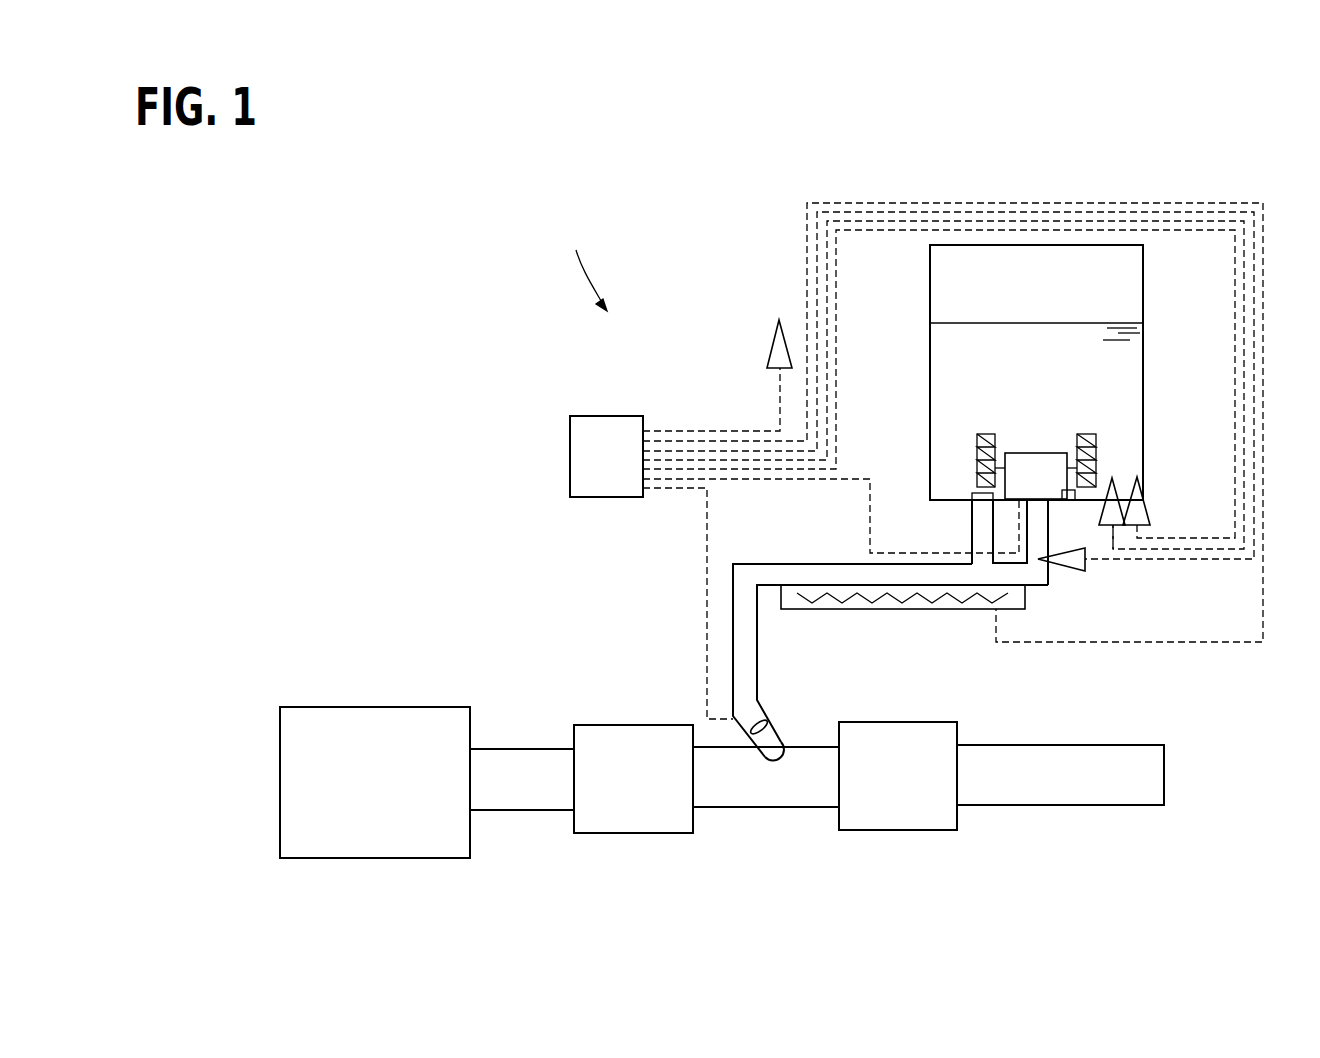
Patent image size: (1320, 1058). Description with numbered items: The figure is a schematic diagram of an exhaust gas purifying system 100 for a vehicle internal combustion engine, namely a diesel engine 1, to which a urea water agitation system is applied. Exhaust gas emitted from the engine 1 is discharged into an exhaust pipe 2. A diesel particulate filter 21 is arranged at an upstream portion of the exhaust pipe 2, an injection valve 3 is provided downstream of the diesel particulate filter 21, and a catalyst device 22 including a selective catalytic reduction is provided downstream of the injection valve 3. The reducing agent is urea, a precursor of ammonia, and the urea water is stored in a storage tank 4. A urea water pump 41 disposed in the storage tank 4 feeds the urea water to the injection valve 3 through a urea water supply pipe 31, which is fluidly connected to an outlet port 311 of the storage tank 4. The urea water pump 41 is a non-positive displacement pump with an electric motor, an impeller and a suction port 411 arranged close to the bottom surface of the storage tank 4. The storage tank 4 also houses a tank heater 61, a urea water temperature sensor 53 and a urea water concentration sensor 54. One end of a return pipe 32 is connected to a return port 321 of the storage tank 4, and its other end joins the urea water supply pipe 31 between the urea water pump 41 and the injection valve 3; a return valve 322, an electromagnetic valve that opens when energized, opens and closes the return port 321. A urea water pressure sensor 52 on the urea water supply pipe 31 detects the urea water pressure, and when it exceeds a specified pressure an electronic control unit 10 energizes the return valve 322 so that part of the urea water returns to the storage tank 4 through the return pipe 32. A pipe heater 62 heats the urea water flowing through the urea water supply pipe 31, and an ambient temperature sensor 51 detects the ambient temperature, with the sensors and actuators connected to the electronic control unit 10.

The exhaust gas purifying system 100 is at (583, 264).
The diesel engine 1 is at (428, 707).
The exhaust pipe 2 is at (1130, 805).
The diesel particulate filter 21 is at (588, 725).
The catalyst device 22 is at (858, 722).
The injection valve 3 is at (733, 716).
The urea water supply pipe 31 is at (787, 564).
The outlet port 311 is at (1049, 513).
The return pipe 32 is at (972, 530).
The return port 321 is at (972, 497).
The return valve 322 is at (977, 493).
The storage tank 4 is at (930, 312).
The urea water pump 41 is at (1031, 453).
The suction port 411 is at (1064, 490).
The ambient temperature sensor 51 is at (767, 346).
The urea water pressure sensor 52 is at (1072, 571).
The urea water temperature sensor 53 is at (1150, 510).
The urea water concentration sensor 54 is at (1117, 527).
The tank heater 61 is at (977, 458).
The pipe heater 62 is at (940, 609).
The electronic control unit 10 is at (590, 414).